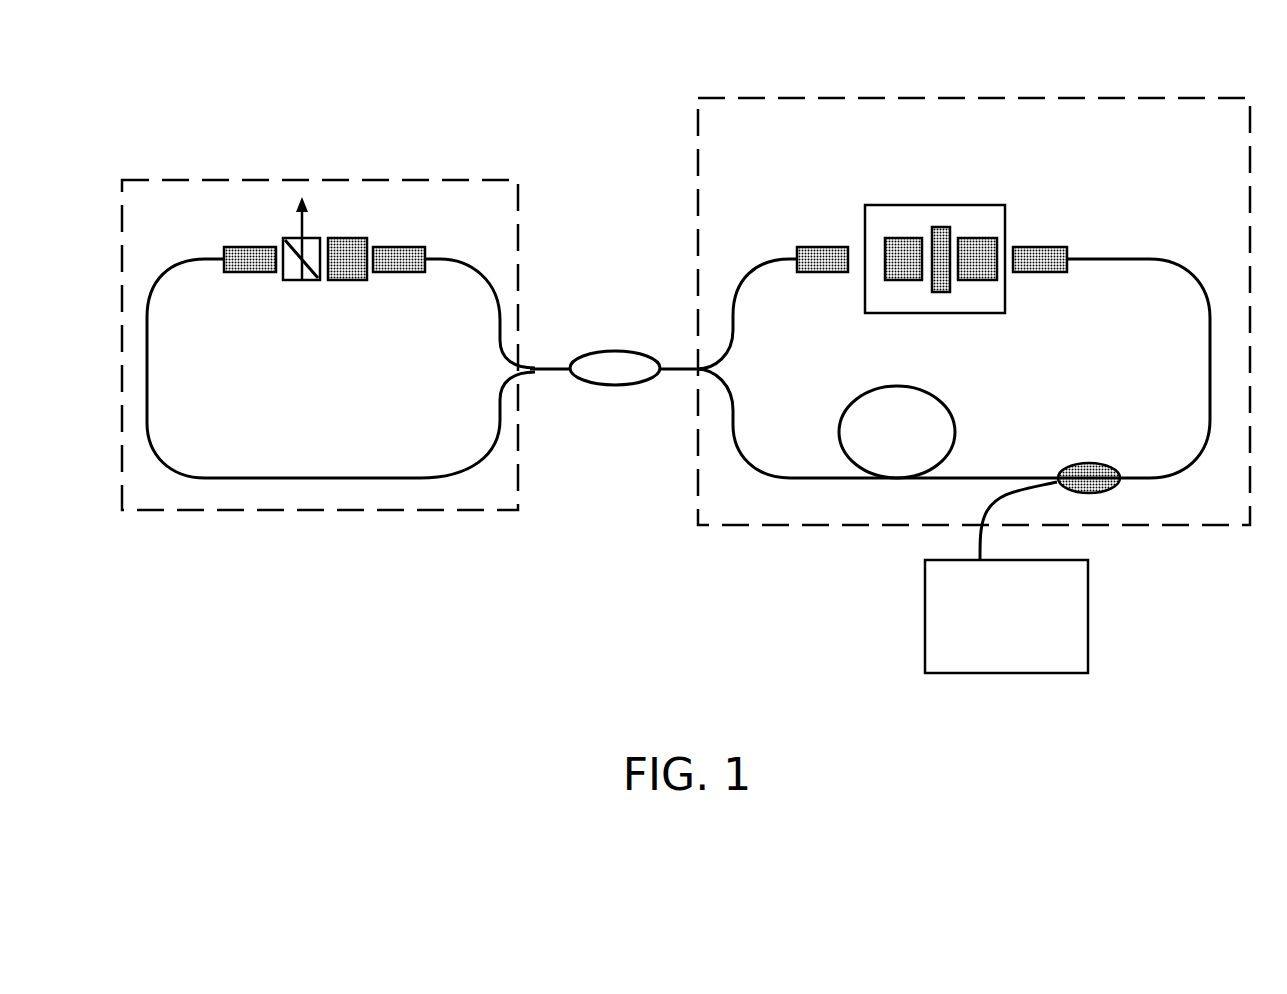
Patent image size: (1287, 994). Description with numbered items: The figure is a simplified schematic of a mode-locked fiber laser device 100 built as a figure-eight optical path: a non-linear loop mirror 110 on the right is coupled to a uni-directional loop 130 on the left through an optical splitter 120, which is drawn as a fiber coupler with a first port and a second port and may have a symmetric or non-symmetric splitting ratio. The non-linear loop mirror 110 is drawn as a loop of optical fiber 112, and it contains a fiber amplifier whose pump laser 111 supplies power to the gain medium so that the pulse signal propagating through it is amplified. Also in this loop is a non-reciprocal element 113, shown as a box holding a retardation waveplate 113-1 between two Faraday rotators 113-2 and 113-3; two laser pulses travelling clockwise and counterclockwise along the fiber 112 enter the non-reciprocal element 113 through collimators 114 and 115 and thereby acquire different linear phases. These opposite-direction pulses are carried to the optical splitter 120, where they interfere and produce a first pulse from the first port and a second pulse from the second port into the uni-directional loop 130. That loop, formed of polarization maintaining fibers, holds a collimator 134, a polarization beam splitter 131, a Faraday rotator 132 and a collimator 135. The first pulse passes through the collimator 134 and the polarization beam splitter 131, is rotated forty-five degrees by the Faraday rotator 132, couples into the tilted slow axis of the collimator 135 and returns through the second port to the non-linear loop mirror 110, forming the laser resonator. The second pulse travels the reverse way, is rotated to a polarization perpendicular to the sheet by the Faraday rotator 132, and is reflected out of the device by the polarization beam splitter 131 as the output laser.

The mode-locked fiber laser device 100 is at (192, 88).
The non-linear loop mirror 110 is at (1152, 97).
The pump laser 111 is at (1088, 612).
The optical fiber loop 112 is at (1123, 258).
The non-reciprocal element 113 is at (1005, 222).
The retardation waveplate 113-1 is at (938, 227).
The Faraday rotator 113-2 is at (905, 238).
The Faraday rotator 113-3 is at (975, 238).
The collimator 114 is at (820, 271).
The collimator 115 is at (1040, 272).
The optical splitter 120 is at (618, 386).
The uni-directional loop 130 is at (425, 180).
The polarization beam splitter 131 is at (300, 282).
The Faraday rotator 132 is at (350, 282).
The collimator 134 is at (247, 248).
The collimator 135 is at (405, 247).